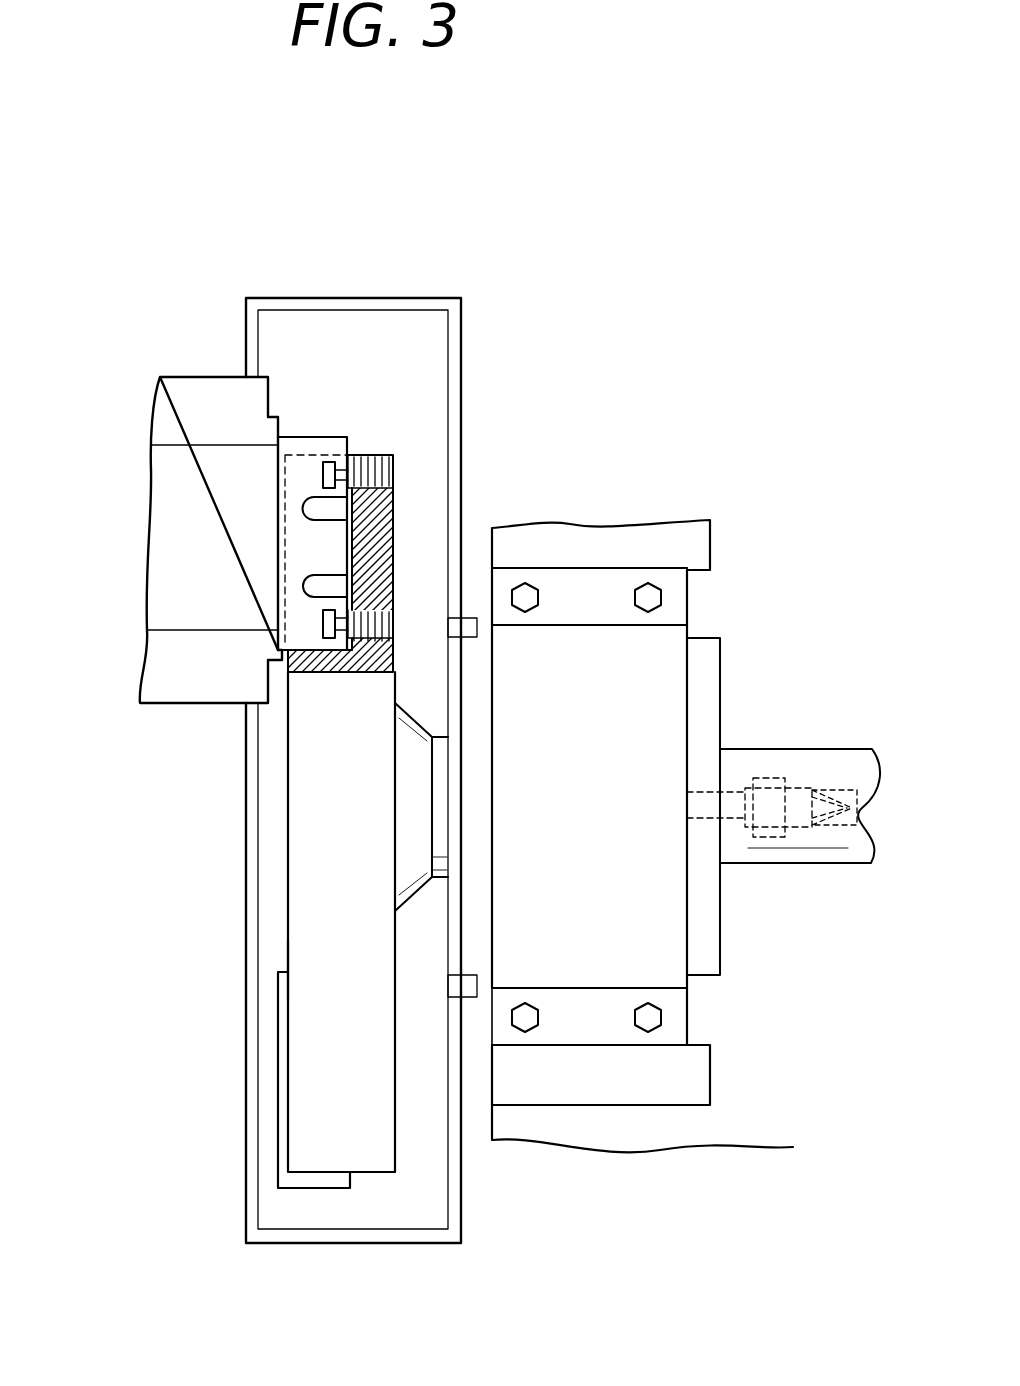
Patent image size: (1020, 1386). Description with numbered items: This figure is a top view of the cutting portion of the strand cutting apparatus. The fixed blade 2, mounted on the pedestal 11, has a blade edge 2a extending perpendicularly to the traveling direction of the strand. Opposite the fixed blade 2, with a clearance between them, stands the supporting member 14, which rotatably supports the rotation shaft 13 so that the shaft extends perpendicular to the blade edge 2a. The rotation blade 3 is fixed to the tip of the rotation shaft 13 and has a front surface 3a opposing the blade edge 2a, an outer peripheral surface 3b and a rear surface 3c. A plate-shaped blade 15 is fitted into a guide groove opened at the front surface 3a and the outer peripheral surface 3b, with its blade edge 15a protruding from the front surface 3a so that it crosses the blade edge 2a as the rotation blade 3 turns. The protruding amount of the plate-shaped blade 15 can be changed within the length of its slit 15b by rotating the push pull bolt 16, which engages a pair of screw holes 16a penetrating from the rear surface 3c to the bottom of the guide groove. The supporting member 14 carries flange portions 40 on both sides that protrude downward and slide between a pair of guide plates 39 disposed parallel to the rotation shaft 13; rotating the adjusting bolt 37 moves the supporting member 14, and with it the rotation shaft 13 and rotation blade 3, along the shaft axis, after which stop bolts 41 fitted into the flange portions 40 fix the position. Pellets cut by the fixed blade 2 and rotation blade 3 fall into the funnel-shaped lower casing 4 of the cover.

The fixed blade 2 is at (211, 531).
The blade edge 2a is at (283, 598).
The rotation blade 3 is at (330, 915).
The front surface 3a is at (287, 959).
The outer peripheral surface 3b is at (370, 1173).
The rear surface 3c is at (395, 647).
The lower casing 4 is at (372, 298).
The pedestal 11 is at (175, 377).
The rotation shaft 13 is at (797, 842).
The supporting member 14 is at (667, 663).
The plate-shaped blade 15 is at (327, 437).
The blade edge 15a is at (275, 473).
The slit 15b is at (310, 588).
The push pull bolt 16 is at (374, 455).
The threaded holes 16a is at (393, 617).
The adjusting bolt 37 is at (824, 790).
The guide plates 39 is at (712, 522).
The flange portions 40 is at (621, 583).
The stop bolts 41 is at (655, 598).